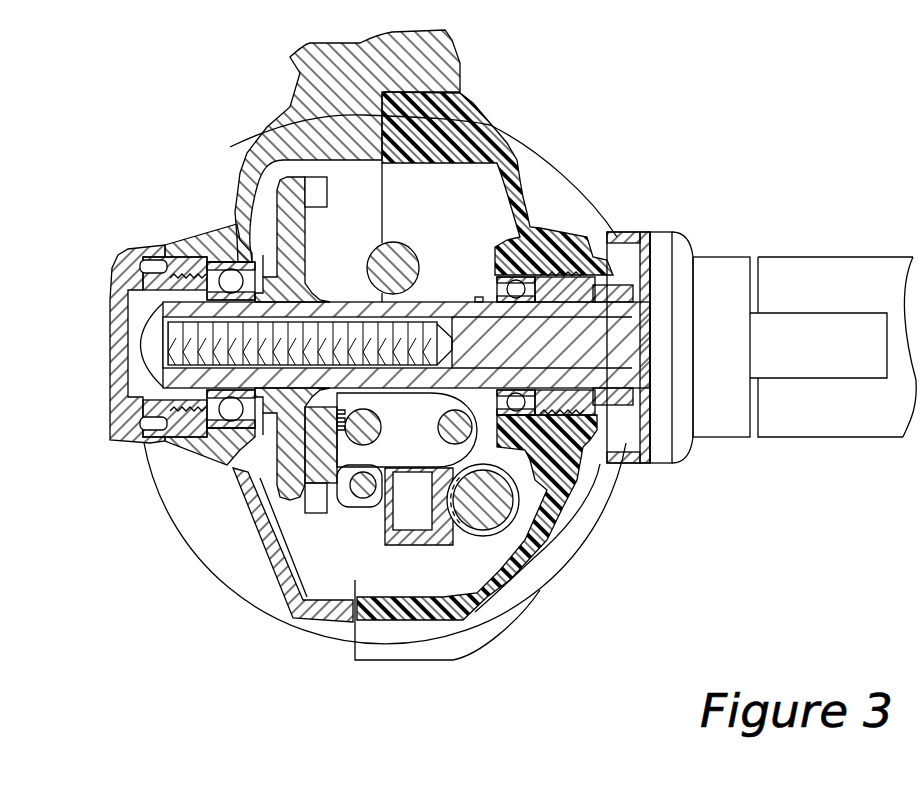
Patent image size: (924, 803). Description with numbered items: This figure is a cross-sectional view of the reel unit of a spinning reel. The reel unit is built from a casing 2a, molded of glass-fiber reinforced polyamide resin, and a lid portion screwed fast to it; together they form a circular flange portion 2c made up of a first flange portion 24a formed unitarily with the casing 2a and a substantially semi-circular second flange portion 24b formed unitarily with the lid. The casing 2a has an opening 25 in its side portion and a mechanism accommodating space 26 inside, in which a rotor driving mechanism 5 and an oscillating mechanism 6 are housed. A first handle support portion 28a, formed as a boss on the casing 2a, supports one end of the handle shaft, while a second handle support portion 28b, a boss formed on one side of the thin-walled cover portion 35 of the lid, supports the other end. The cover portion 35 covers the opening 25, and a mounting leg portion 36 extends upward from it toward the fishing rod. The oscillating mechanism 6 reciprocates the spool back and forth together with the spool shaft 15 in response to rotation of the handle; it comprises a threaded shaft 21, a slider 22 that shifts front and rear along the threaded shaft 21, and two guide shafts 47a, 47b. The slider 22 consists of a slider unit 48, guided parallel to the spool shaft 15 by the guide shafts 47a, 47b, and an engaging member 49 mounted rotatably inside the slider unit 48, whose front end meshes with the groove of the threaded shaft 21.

The casing 2a is at (540, 600).
The circular flange portion 2c is at (684, 68).
The rotor driving mechanism 5 is at (340, 233).
The oscillating mechanism 6 is at (447, 578).
The spool shaft 15 is at (350, 462).
The threaded shaft 21 is at (545, 522).
The slider 22 is at (300, 486).
The first flange portion 24a is at (533, 173).
The second flange portion 24b is at (485, 123).
The opening 25 is at (345, 618).
The mechanism accommodating space 26 is at (266, 566).
The first handle support portion 28a is at (563, 257).
The second handle support portion 28b is at (166, 246).
The cover portion 35 is at (255, 545).
The mounting leg portion 36 is at (452, 62).
The guide shaft 47a is at (358, 492).
The guide shaft 47b is at (500, 512).
The slider unit 48 is at (258, 432).
The engaging member 49 is at (413, 522).